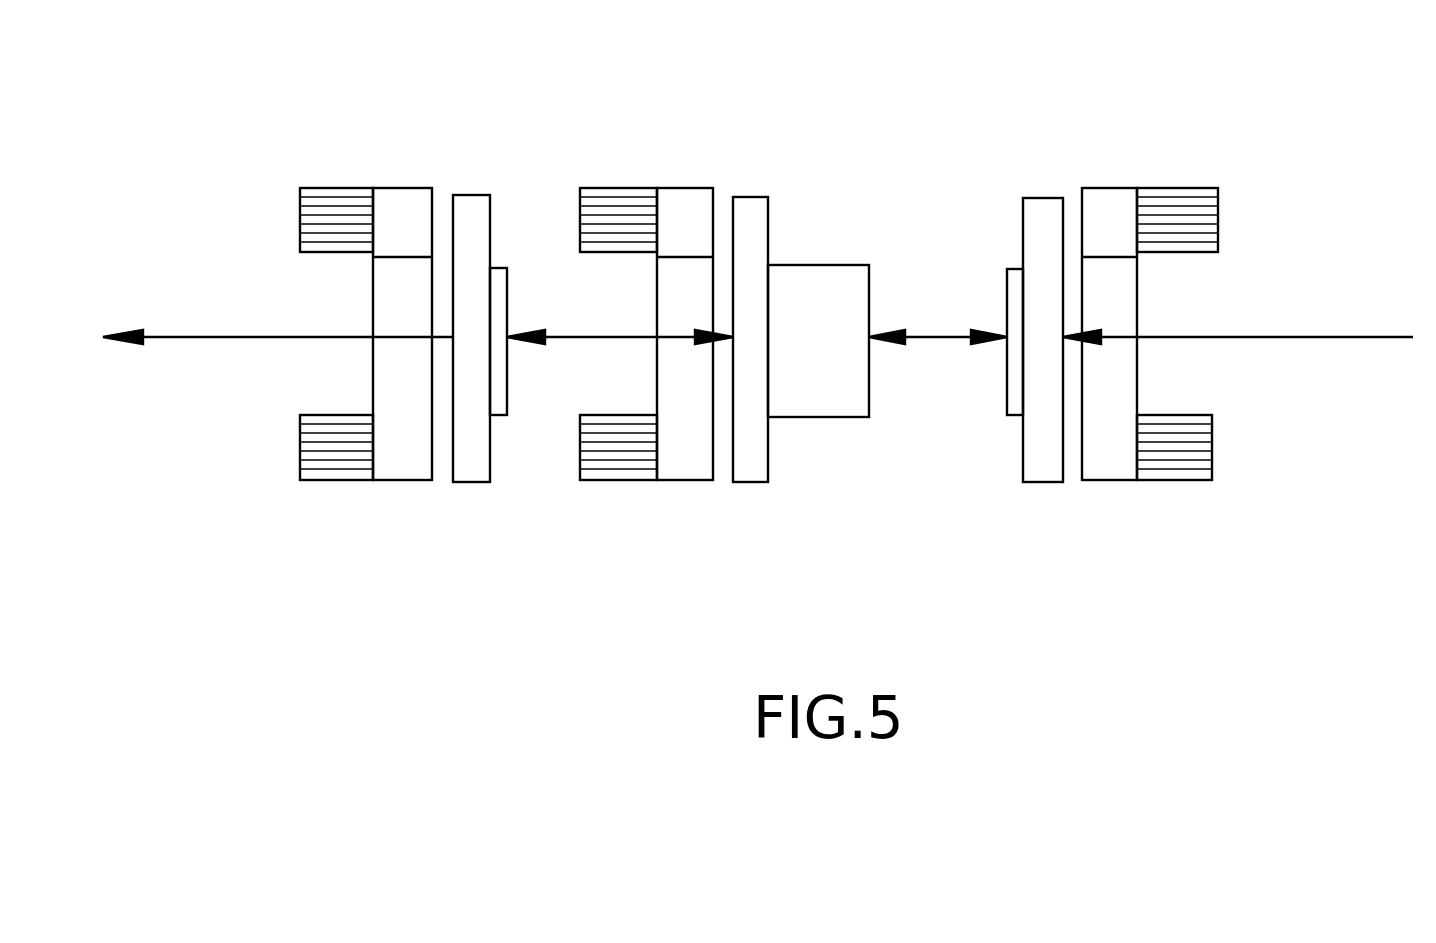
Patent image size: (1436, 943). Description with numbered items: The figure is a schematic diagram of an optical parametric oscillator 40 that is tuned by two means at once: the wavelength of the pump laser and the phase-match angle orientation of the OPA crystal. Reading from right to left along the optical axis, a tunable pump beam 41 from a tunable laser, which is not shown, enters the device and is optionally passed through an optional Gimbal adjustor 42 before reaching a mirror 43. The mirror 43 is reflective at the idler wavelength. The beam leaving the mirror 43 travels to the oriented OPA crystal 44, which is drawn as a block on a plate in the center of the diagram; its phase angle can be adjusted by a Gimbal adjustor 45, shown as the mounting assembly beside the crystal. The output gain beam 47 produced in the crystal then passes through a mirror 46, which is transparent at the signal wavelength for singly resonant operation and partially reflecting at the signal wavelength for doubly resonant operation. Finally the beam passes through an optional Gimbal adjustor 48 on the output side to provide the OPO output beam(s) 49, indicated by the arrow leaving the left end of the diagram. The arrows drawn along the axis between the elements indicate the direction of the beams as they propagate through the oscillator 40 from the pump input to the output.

The optical parametric oscillator 40 is at (932, 72).
The tunable pump beam 41 is at (1378, 310).
The Gimbal adjustor 42 is at (1117, 192).
The mirror 43 is at (1055, 197).
The oriented OPA crystal 44 is at (822, 458).
The Gimbal adjustor 45 is at (707, 160).
The mirror 46 is at (470, 196).
The output gain beam 47 is at (600, 335).
The Gimbal adjustor 48 is at (407, 188).
The OPO output beam(s) 49 is at (320, 298).